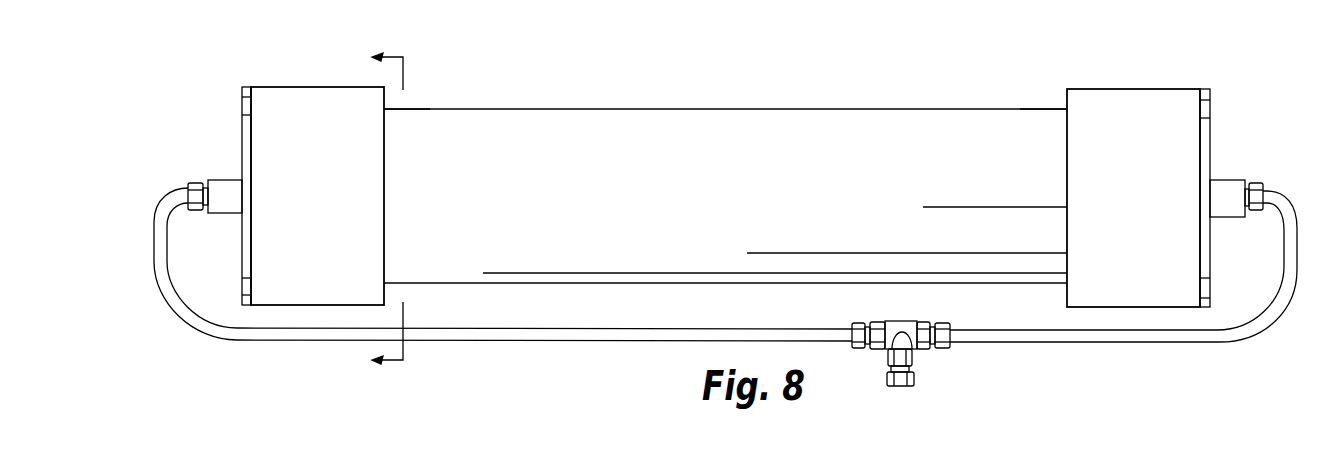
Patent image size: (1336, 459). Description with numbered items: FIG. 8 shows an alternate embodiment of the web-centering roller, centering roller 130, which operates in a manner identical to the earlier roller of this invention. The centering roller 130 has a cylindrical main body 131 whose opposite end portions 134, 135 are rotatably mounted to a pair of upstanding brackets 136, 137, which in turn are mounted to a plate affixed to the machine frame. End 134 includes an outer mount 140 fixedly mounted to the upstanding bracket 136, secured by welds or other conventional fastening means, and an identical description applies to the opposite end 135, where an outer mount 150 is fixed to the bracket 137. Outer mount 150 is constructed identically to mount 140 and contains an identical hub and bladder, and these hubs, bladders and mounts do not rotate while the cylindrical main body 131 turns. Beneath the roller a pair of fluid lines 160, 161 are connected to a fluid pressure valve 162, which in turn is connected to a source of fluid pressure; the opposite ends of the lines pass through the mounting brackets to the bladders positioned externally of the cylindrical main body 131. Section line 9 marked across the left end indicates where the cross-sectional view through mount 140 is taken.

The centering roller 130 is at (795, 70).
The cylindrical main body 131 is at (617, 109).
The end portion 134 is at (413, 109).
The end portion 135 is at (1026, 110).
The upstanding bracket 136 is at (241, 136).
The upstanding bracket 137 is at (1211, 137).
The outer mount 140 is at (298, 108).
The outer mount 150 is at (1137, 120).
The fluid line 160 is at (510, 341).
The fluid line 161 is at (1082, 343).
The fluid pressure valve 162 is at (906, 345).
The section line 9- 9 is at (376, 208).